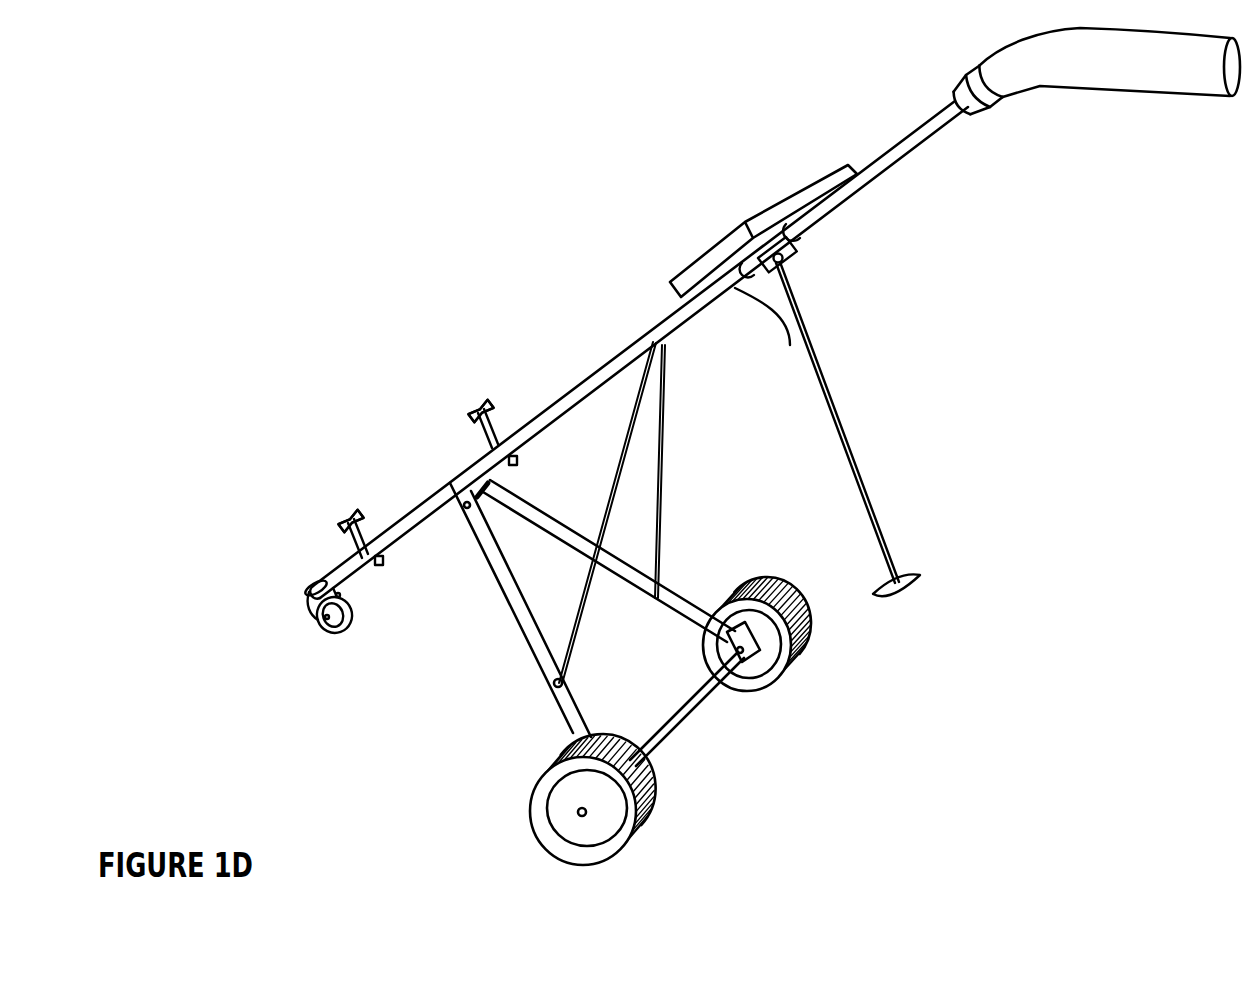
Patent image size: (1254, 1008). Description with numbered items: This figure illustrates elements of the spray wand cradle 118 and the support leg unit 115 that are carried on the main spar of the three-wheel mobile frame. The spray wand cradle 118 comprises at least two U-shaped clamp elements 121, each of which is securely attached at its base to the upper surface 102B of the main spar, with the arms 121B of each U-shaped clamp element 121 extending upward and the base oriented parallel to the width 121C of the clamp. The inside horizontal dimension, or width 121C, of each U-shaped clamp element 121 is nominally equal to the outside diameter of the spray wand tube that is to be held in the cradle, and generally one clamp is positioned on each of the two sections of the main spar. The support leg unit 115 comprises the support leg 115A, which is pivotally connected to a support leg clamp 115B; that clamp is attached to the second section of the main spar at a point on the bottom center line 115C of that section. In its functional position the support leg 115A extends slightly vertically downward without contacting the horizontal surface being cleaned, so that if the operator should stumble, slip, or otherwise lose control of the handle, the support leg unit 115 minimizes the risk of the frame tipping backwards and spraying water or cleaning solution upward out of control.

The spray wand cradle 118 is at (390, 375).
The U-shaped clamp element 121 is at (337, 525).
The arms of the U-shaped clamp element 121B is at (351, 511).
The width of the U-shaped clamp element 121C is at (487, 434).
The upper surface of the main spar 102B is at (405, 538).
The support leg unit 115 is at (868, 410).
The support leg 115A is at (867, 478).
The support leg clamp 115B is at (803, 245).
The bottom center line of the second section 115C is at (790, 346).